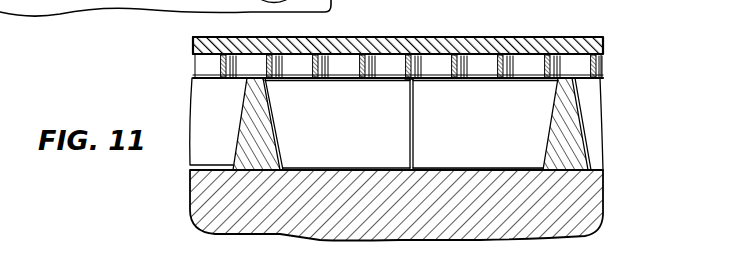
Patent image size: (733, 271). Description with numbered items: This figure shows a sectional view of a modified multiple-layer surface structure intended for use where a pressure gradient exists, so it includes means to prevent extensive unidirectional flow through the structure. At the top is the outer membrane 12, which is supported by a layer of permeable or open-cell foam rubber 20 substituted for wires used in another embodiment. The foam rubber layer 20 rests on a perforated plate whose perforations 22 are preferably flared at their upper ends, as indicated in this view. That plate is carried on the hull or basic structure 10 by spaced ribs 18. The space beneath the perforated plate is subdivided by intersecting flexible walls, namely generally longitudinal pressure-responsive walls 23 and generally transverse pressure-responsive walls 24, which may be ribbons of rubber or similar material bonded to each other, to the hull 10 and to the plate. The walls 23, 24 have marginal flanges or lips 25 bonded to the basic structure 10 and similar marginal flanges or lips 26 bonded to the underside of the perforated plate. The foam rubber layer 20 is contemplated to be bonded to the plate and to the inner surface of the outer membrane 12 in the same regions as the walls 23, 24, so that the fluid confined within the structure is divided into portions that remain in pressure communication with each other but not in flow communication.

The hull or basic structure 10 is at (450, 217).
The outer membrane 12 is at (352, 37).
The spaced ribs 18 is at (268, 146).
The foam rubber layer 20 is at (193, 47).
The perforations 22 is at (590, 72).
The longitudinal pressure-responsive walls 23 is at (415, 138).
The transverse pressure-responsive walls 24 is at (485, 125).
The marginal flanges or lips 25 is at (420, 167).
The marginal flanges or lips 26 is at (408, 78).